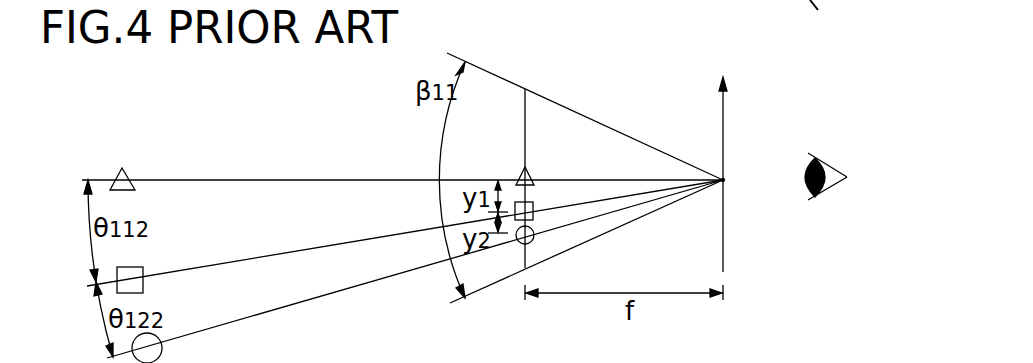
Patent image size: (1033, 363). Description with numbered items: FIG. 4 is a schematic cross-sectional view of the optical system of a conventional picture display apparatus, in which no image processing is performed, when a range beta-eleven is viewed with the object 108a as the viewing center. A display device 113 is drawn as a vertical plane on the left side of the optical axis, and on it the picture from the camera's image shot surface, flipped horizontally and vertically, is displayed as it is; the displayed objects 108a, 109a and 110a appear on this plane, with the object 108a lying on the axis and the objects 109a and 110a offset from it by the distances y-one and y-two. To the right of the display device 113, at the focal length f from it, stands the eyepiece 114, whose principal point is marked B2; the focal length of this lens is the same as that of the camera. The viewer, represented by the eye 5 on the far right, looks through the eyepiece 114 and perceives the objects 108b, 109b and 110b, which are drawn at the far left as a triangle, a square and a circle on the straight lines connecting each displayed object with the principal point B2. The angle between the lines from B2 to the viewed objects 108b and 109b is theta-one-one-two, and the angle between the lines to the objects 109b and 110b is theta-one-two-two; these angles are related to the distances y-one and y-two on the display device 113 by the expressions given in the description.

The observer's eye 5 is at (833, 150).
The object 108a is at (528, 177).
The object 108b is at (128, 178).
The object 109a is at (540, 200).
The object 109b is at (132, 275).
The object 110a is at (533, 242).
The object 110b is at (148, 338).
The display device 113 is at (525, 112).
The eyepiece 114 is at (727, 100).
The principal point B2 is at (727, 175).